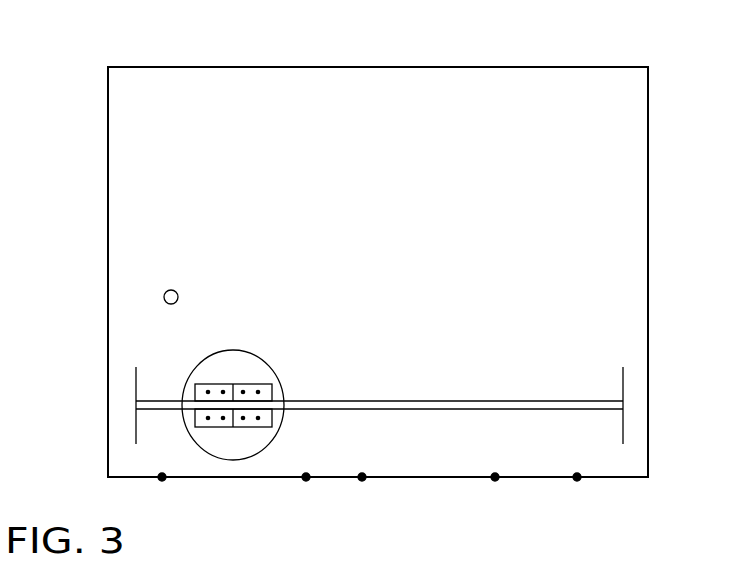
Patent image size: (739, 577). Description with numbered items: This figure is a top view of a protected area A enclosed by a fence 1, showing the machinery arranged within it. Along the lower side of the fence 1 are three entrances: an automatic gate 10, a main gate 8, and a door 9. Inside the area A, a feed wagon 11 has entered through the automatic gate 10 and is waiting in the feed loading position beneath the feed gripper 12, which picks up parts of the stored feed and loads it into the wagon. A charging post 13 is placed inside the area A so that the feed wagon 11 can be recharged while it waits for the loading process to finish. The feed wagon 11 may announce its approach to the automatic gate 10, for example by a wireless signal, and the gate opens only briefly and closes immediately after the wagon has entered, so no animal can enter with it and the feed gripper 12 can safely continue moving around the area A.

The fence 1 is at (378, 67).
The protected area A is at (490, 135).
The charging post 13 is at (166, 291).
The feed wagon 11 is at (263, 361).
The feed gripper 12 is at (251, 425).
The automatic gate 10 is at (306, 490).
The main gate 8 is at (495, 490).
The door 9 is at (577, 490).